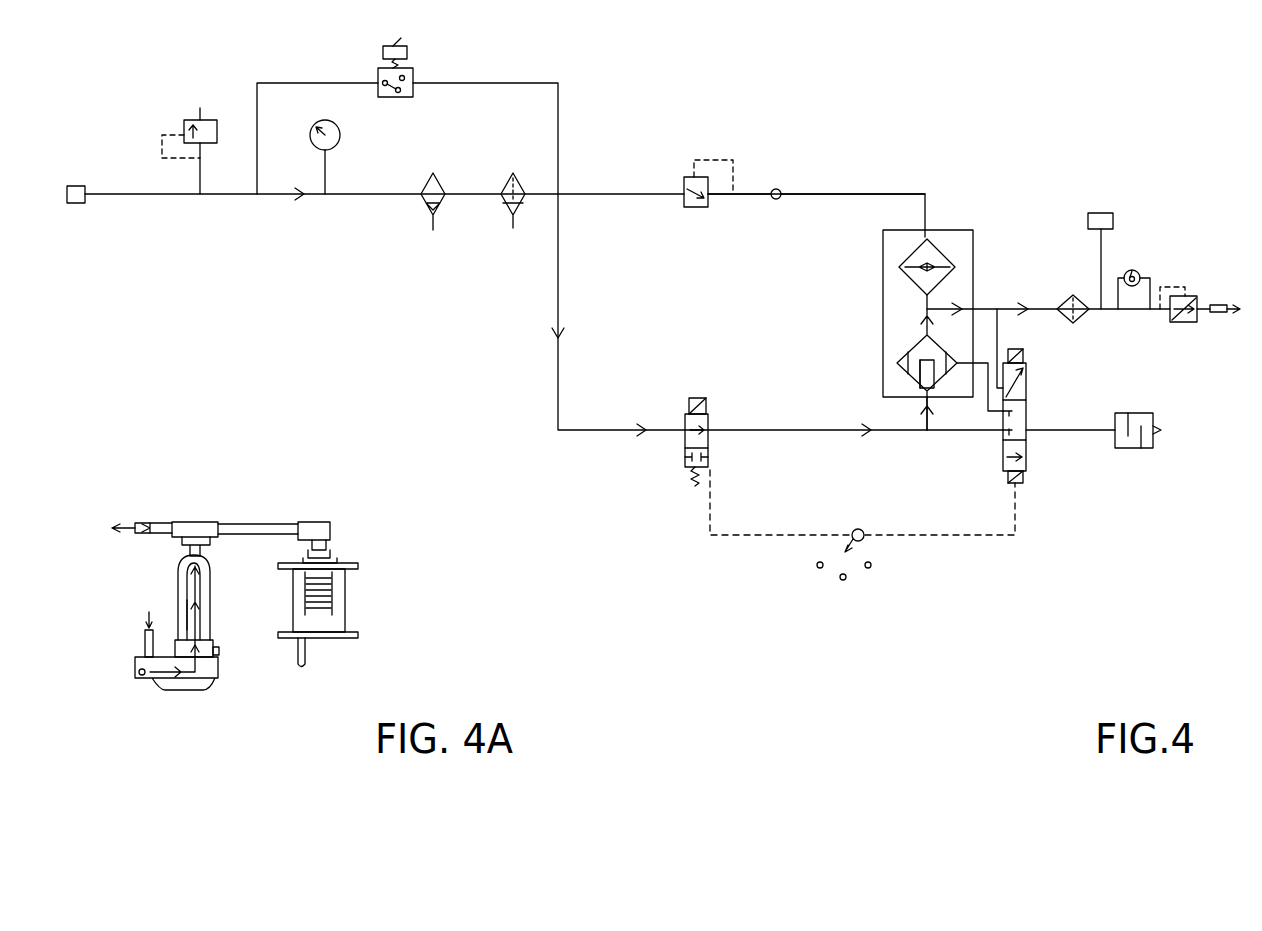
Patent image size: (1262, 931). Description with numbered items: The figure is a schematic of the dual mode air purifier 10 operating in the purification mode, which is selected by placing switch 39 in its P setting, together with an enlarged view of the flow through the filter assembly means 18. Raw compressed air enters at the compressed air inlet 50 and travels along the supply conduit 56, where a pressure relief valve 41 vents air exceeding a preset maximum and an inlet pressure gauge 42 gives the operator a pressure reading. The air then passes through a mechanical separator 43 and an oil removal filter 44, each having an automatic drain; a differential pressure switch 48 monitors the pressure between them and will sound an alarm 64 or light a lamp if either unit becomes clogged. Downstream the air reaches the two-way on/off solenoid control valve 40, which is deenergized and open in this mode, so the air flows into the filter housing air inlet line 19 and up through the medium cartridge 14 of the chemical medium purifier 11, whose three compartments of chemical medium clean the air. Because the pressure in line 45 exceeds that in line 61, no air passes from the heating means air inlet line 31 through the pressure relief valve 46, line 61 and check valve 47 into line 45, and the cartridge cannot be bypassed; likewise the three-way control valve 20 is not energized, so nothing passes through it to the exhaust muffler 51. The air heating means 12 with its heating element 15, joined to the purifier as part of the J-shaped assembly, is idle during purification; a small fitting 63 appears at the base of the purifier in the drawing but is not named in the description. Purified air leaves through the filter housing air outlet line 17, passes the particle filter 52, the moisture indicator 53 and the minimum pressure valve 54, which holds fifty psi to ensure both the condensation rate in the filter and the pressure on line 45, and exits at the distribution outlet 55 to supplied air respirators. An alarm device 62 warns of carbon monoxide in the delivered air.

In FIG. 4, the dual mode air purifier 10 is at (143, 62).
In FIG. 4, the compressed air inlet 50 is at (70, 186).
In FIG. 4, the supply conduit 56 is at (141, 200).
In FIG. 4, the pressure relief valve 41 is at (210, 120).
In FIG. 4, the inlet pressure gauge 42 is at (341, 136).
In FIG. 4, the mechanical separator 43 is at (437, 178).
In FIG. 4, the oil removal filter 44 is at (524, 166).
In FIG. 4, the heating means air inlet line 31 is at (596, 194).
In FIG. 4, the alarm 64 is at (383, 50).
In FIG. 4, the differential pressure switch 48 is at (415, 70).
In FIG. 4, the pressure relief valve 46 is at (684, 178).
In FIG. 4, the line 61 is at (748, 194).
In FIG. 4, the check valve 47 is at (779, 190).
In FIG. 4, the line 45 is at (893, 194).
In FIG. 4A, the line 45 is at (306, 659).
In FIG. 4, the alarm device 62 is at (1108, 213).
In FIG. 4, the moisture indicator 53 is at (1138, 272).
In FIG. 4, the minimum pressure valve 54 is at (1195, 296).
In FIG. 4, the distribution outlet 55 is at (1224, 313).
In FIG. 4, the particle filter 52 is at (1078, 322).
In FIG. 4, the air heating means 12 is at (945, 265).
In FIG. 4A, the air heating means 12 is at (358, 617).
In FIG. 4, the filter housing air outlet line 17 is at (945, 309).
In FIG. 4A, the filter housing air outlet line 17 is at (160, 520).
In FIG. 4, the filter assembly means 18 is at (871, 302).
In FIG. 4A, the filter assembly means 18 is at (371, 519).
In FIG. 4, the chemical medium purifier 11 is at (915, 343).
In FIG. 4A, the chemical medium purifier 11 is at (178, 580).
In FIG. 4, the connection port 63 is at (967, 360).
In FIG. 4A, the connection port 63 is at (219, 653).
In FIG. 4, the medium cartridge 14 is at (935, 380).
In FIG. 4A, the medium cartridge 14 is at (203, 600).
In FIG. 4, the filter housing air inlet line 19 is at (930, 416).
In FIG. 4A, the filter housing air inlet line 19 is at (145, 642).
In FIG. 4, the control valve 20 is at (1037, 383).
In FIG. 4, the exhaust muffler 51 is at (1145, 413).
In FIG. 4, the two-way on/off solenoid control valve 40 is at (708, 402).
In FIG. 4, the switch 39 is at (860, 529).
In FIG. 4A, the heating element 15 is at (326, 592).